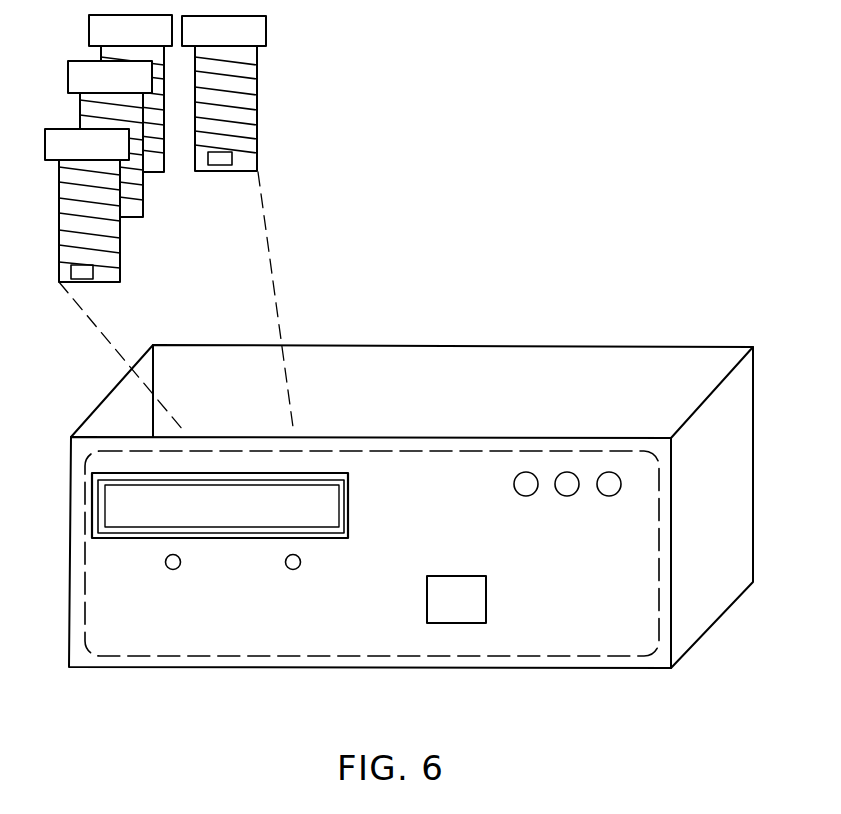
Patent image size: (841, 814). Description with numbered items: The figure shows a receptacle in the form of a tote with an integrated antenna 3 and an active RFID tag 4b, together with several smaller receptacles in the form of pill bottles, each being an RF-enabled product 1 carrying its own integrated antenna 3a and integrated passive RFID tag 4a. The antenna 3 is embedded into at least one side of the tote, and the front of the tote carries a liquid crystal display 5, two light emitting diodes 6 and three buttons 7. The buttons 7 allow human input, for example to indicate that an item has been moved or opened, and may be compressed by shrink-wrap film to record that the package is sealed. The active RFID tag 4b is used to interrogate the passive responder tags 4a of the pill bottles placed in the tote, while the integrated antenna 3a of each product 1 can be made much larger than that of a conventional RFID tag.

The RF-enabled product 1 is at (259, 101).
The integrated antenna 3a is at (248, 115).
The integrated passive RFID tag 4a is at (233, 157).
The antenna 3 is at (608, 657).
The liquid crystal display 5 is at (140, 538).
The light emitting diodes 6 is at (292, 570).
The buttons 7 is at (569, 471).
The active RFID tag 4b is at (457, 623).